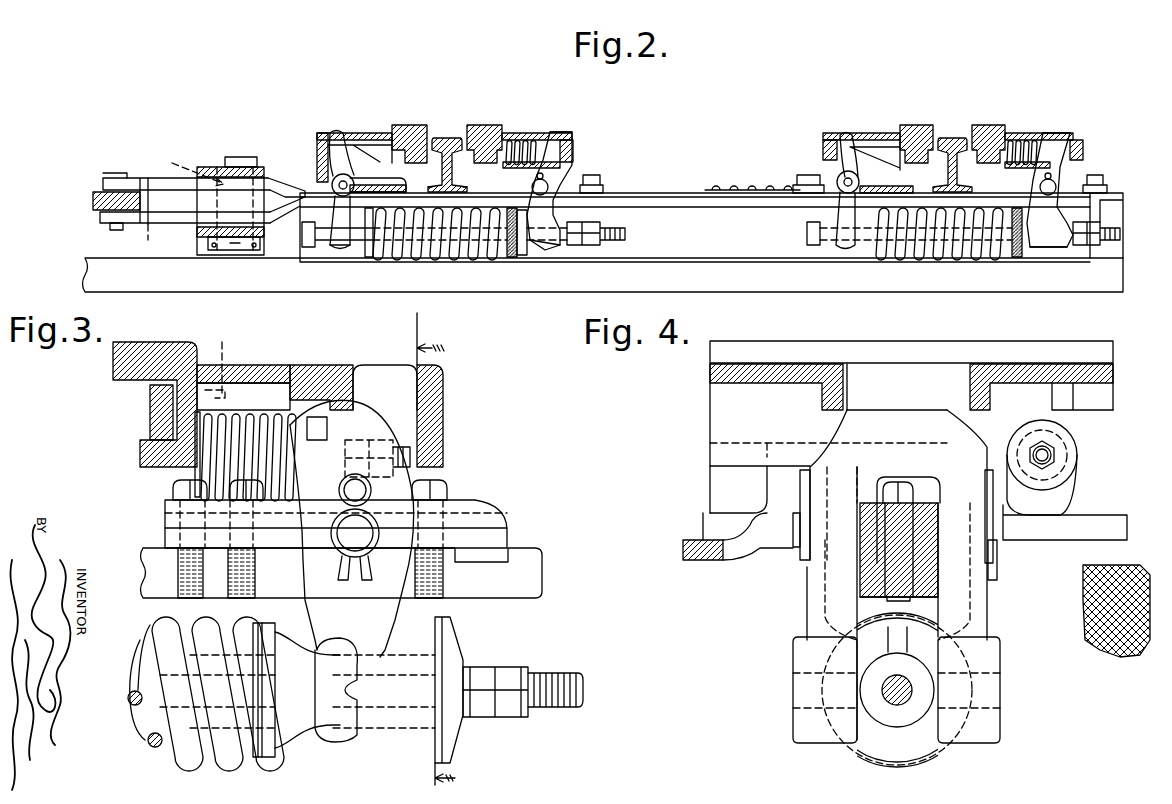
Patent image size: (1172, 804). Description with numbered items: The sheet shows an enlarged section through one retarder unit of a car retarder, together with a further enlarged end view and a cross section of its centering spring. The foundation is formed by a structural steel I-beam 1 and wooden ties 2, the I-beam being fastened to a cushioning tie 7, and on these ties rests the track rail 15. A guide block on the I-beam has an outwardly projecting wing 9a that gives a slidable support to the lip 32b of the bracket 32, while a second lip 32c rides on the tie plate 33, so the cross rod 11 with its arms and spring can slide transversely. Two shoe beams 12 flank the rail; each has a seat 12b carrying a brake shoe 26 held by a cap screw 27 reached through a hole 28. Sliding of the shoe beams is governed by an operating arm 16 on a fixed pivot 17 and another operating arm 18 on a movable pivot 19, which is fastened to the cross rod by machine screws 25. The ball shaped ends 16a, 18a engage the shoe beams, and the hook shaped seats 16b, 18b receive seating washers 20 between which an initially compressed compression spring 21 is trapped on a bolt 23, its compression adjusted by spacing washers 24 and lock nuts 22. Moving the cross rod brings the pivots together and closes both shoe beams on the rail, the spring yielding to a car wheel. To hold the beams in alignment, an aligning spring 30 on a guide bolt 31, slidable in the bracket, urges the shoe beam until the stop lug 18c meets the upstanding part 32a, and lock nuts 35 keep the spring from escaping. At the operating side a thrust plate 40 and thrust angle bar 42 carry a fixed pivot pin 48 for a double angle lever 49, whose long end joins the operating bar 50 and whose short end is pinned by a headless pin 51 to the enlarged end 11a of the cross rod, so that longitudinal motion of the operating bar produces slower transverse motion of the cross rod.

In FIG. 2, the structural steel I-beam 1 is at (1123, 245).
In FIG. 4, the structural steel I-beam 1 is at (683, 553).
In FIG. 4, the wooden tie 2 is at (1118, 655).
In FIG. 2, the cushioning tie 7 is at (1123, 283).
In FIG. 4, the outwardly projecting wing 9a is at (733, 556).
In FIG. 2, the cross rod 11 is at (1000, 193).
In FIG. 3, the cross rod 11 is at (542, 575).
In FIG. 4, the cross rod 11 is at (930, 593).
In FIG. 2, the enlarged end of cross bar 11a is at (262, 192).
In FIG. 2, the shoe beam 12 is at (378, 133).
In FIG. 3, the shoe beam 12 is at (443, 372).
In FIG. 4, the shoe beam 12 is at (710, 407).
In FIG. 2, the seat 12b is at (428, 140).
In FIG. 2, the track rail 15 is at (447, 138).
In FIG. 2, the operating arm 16 is at (325, 150).
In FIG. 2, the ball shaped end of operating arm 16a is at (330, 133).
In FIG. 2, the hook shaped seat 16b is at (338, 247).
In FIG. 2, the fixed pivot 17 is at (333, 180).
In FIG. 2, the operating arm 18 is at (568, 160).
In FIG. 3, the operating arm 18 is at (315, 613).
In FIG. 4, the operating arm 18 is at (808, 610).
In FIG. 2, the ball shaped end of operating arm 18a is at (560, 136).
In FIG. 3, the ball shaped end of operating arm 18a is at (388, 372).
In FIG. 4, the ball shaped end of operating arm 18a is at (923, 372).
In FIG. 2, the hook shaped seat 18b is at (550, 249).
In FIG. 3, the hook shaped seat 18b is at (383, 697).
In FIG. 3, the stop lug 18c is at (348, 400).
In FIG. 2, the movable pivot 19 is at (550, 185).
In FIG. 3, the movable pivot 19 is at (372, 534).
In FIG. 4, the movable pivot 19 is at (996, 562).
In FIG. 2, the seating washer 20 is at (523, 240).
In FIG. 2, the compression spring 21 is at (468, 255).
In FIG. 3, the compression spring 21 is at (170, 757).
In FIG. 4, the compression spring 21 is at (857, 753).
In FIG. 2, the lock nut 22 is at (593, 228).
In FIG. 3, the lock nut 22 is at (515, 718).
In FIG. 2, the bolt 23 is at (303, 233).
In FIG. 3, the bolt 23 is at (583, 690).
In FIG. 4, the bolt 23 is at (900, 703).
In FIG. 2, the spacing washer 24 is at (512, 257).
In FIG. 3, the spacing washer 24 is at (262, 757).
In FIG. 3, the machine screw 25 is at (173, 490).
In FIG. 4, the machine screw 25 is at (880, 490).
In FIG. 2, the brake shoe 26 is at (410, 125).
In FIG. 3, the brake shoe 26 is at (156, 337).
In FIG. 3, the cap screw 27 is at (222, 355).
In FIG. 3, the hole 28 is at (253, 397).
In FIG. 2, the aligning spring 30 is at (522, 140).
In FIG. 3, the aligning spring 30 is at (268, 425).
In FIG. 3, the guide bolt 31 is at (195, 470).
In FIG. 4, the guide bolt 31 is at (1055, 455).
In FIG. 3, the bracket 32 is at (165, 516).
In FIG. 4, the bracket 32 is at (935, 540).
In FIG. 3, the upstanding part of bracket 32a is at (318, 437).
In FIG. 4, the upstanding part of bracket 32a is at (1070, 445).
In FIG. 4, the lip of bracket 32b is at (797, 552).
In FIG. 4, the lip of bracket 32c is at (1012, 540).
In FIG. 4, the tie plate 33 is at (1055, 540).
In FIG. 3, the lock nut 35 is at (387, 433).
In FIG. 4, the lock nut 35 is at (1052, 470).
In FIG. 2, the thrust plate 40 is at (213, 168).
In FIG. 2, the thrust angle bar 42 is at (197, 240).
In FIG. 2, the fixed pivot pin 48 is at (241, 157).
In FIG. 2, the double angle lever 49 is at (148, 230).
In FIG. 2, the operating bar 50 is at (93, 203).
In FIG. 2, the headless pin 51 is at (185, 162).